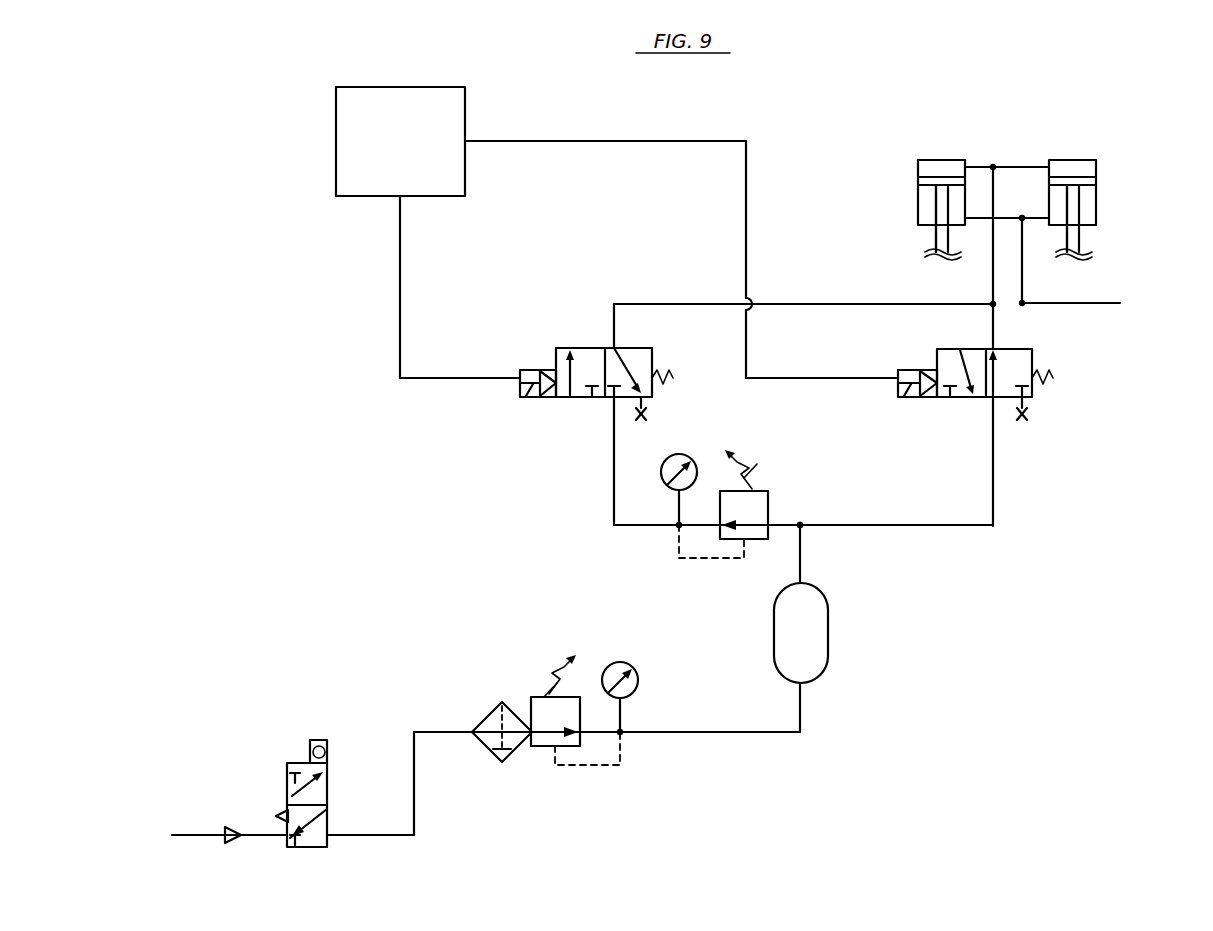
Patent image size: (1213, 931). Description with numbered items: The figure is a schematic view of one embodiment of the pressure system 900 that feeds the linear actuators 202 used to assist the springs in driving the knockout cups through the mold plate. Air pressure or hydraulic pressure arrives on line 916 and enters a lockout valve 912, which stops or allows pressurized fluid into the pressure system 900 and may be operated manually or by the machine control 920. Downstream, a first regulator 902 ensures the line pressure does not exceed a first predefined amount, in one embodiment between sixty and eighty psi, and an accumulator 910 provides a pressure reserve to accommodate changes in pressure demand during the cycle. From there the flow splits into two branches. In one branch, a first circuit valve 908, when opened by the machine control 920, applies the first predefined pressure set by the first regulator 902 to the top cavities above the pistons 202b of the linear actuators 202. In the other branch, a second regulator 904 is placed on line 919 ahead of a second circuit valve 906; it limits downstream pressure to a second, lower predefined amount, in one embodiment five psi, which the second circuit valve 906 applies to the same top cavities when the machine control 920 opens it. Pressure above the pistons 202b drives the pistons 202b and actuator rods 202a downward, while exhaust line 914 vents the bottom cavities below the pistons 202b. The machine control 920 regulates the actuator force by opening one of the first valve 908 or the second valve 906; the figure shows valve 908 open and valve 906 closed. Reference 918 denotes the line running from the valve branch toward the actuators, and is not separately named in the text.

The pressure system 900 is at (578, 108).
The machine control 920 is at (377, 142).
The linear actuators 202 is at (935, 159).
The actuator rods 202a is at (935, 216).
The pistons 202b is at (922, 180).
The first regulator 902 is at (621, 769).
The second regulator 904 is at (677, 549).
The second circuit valve 906 is at (552, 398).
The first circuit valve 908 is at (1033, 398).
The accumulator 910 is at (826, 632).
The lockout valve 912 is at (296, 762).
The exhaust line 914 is at (1085, 304).
The supply line 916 is at (189, 834).
The pressure line 918 is at (994, 527).
The line 919 is at (801, 522).